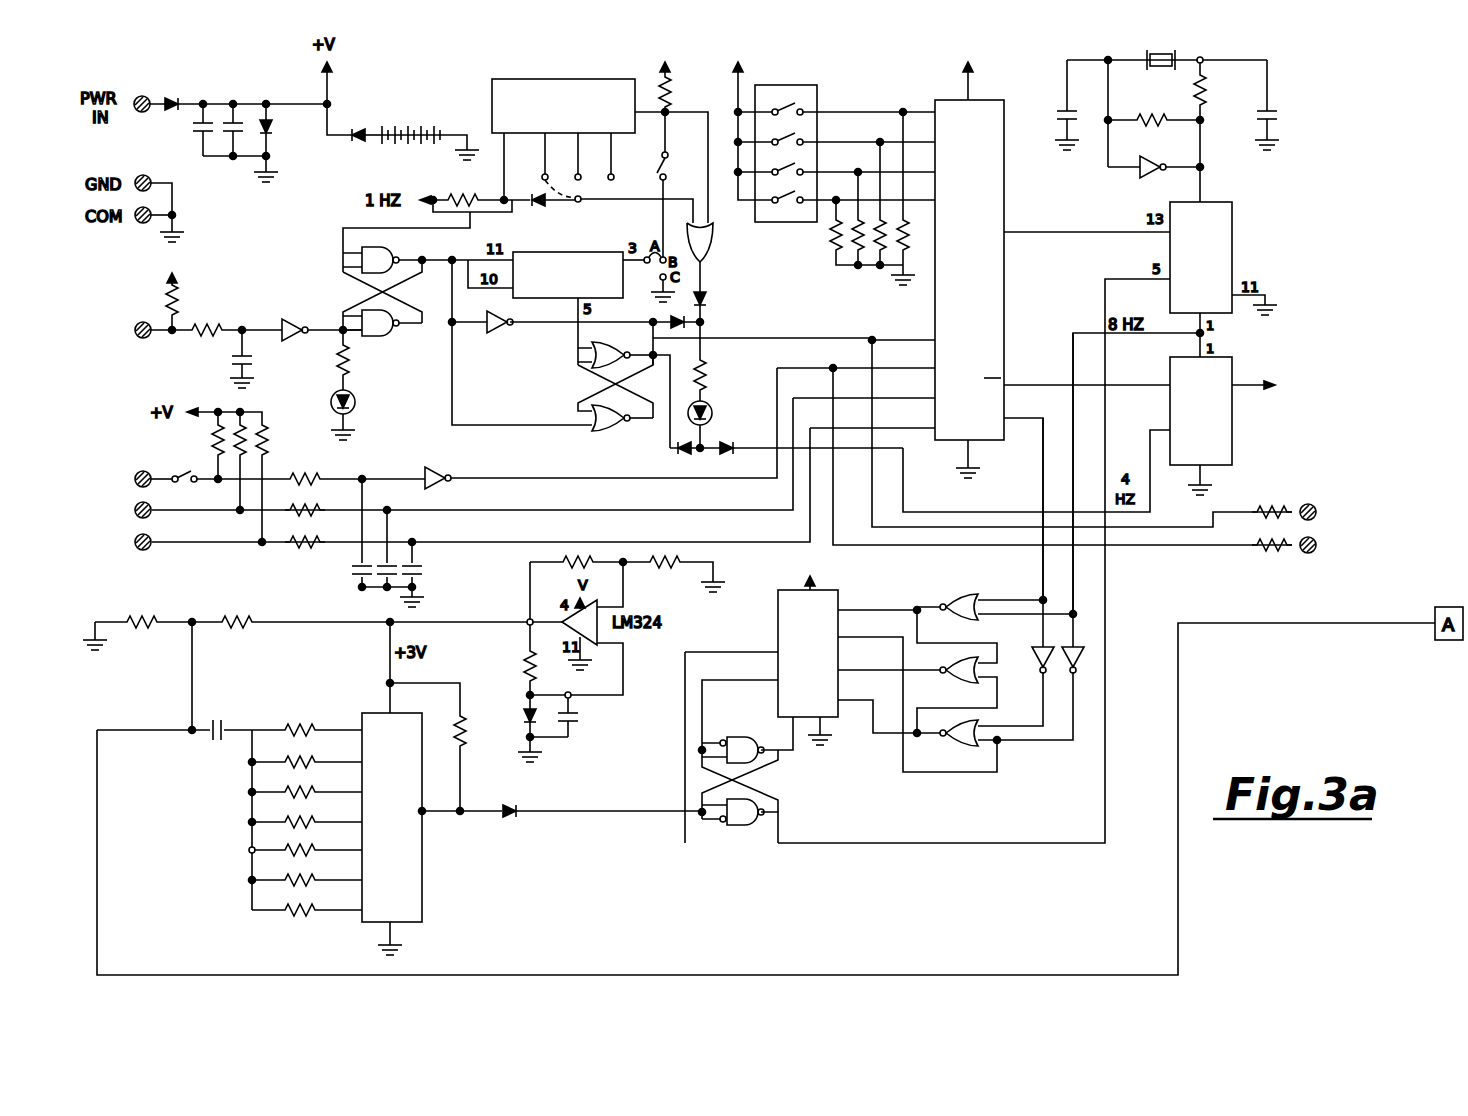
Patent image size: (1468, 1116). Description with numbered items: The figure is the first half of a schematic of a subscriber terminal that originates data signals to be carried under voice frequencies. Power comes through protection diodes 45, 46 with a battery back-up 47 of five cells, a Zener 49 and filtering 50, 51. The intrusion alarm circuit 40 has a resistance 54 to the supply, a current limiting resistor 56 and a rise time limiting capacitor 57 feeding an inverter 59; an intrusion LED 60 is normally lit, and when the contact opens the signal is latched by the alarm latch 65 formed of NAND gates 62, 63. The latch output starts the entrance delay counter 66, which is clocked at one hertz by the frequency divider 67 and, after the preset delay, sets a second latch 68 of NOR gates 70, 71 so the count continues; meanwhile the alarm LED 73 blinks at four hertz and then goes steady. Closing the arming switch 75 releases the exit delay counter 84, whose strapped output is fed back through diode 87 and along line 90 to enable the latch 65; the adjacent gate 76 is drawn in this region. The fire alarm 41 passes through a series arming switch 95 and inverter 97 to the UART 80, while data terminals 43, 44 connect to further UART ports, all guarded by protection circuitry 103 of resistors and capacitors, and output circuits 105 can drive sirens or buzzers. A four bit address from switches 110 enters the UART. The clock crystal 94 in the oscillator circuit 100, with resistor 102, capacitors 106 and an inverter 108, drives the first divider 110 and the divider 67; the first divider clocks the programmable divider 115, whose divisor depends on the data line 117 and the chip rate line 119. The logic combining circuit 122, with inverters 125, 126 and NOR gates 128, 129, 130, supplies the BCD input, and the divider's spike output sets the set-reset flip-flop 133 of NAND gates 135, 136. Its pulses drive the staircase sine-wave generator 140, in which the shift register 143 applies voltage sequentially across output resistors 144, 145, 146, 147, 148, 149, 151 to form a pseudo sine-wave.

The intrusion alarm circuit 40 is at (224, 319).
The fire alarm 41 is at (133, 466).
The data terminal 43 is at (126, 500).
The data terminal 44 is at (126, 530).
The protection diode 45 is at (172, 98).
The protection diode 46 is at (355, 142).
The battery back-up 47 is at (415, 100).
The Zener 49 is at (266, 122).
The filtering capacitor 50 is at (203, 118).
The filtering capacitor 51 is at (233, 120).
The resistance 54 is at (180, 308).
The current limiting resistor 56 is at (197, 324).
The rise time limiting capacitor 57 is at (254, 356).
The inverter 59 is at (300, 318).
The intrusion LED 60 is at (352, 416).
The NAND gate 62 is at (380, 338).
The NAND gate 63 is at (345, 256).
The alarm latch 65 is at (406, 332).
The entrance delay counter 66 is at (555, 298).
The frequency divider 67 is at (1232, 430).
The second latch 68 is at (606, 396).
The NOR gate 70 is at (610, 436).
The NOR gate 71 is at (622, 340).
The alarm LED 73 is at (718, 402).
The arming switch 75 is at (652, 172).
The OR gate 76 is at (713, 238).
The UART 80 is at (1004, 300).
The exit delay counter 84 is at (492, 92).
The diode 87 is at (495, 201).
The line 90 is at (365, 278).
The clock crystal 94 is at (1157, 70).
The series arming switch 95 is at (190, 484).
The inverter 97 is at (438, 468).
The oscillator circuit 100 is at (809, 330).
The resistor 102 is at (1150, 115).
The protection circuitry 103 is at (1205, 92).
The output circuits 105 is at (1080, 125).
The capacitor 106 is at (1278, 118).
The inverter 108 is at (1158, 152).
The first divider 110 is at (817, 87).
The programmable divider 115 is at (778, 708).
The data line 117 is at (1043, 564).
The chip rate line 119 is at (1076, 580).
The logic combining circuit 122 is at (991, 741).
The inverter 125 is at (1082, 660).
The inverter 126 is at (1038, 664).
The NOR gate 128 is at (964, 748).
The NOR gate 129 is at (962, 654).
The NOR gate 130 is at (962, 590).
The set-reset flip-flop 133 is at (733, 815).
The NAND gate 135 is at (748, 740).
The NAND gate 136 is at (730, 826).
The staircase sine-wave generator 140 is at (229, 817).
The shift register 143 is at (422, 850).
The output resistor 144 is at (303, 718).
The output resistor 145 is at (296, 768).
The output resistor 146 is at (296, 798).
The output resistor 147 is at (296, 828).
The output resistor 148 is at (296, 855).
The output resistor 149 is at (296, 882).
The output resistor 151 is at (298, 920).